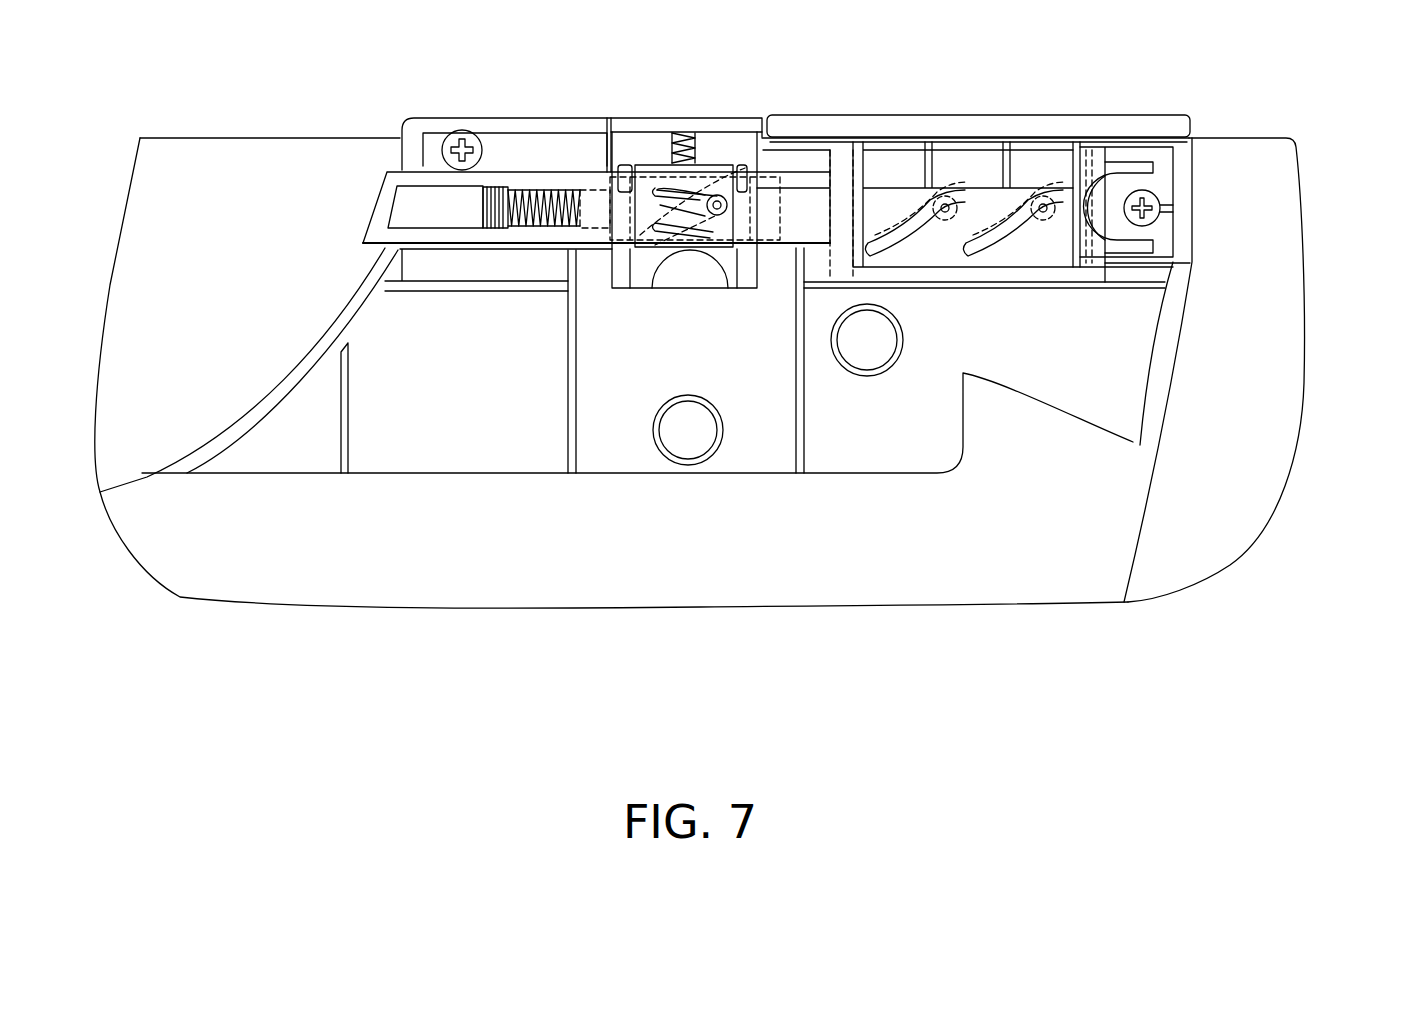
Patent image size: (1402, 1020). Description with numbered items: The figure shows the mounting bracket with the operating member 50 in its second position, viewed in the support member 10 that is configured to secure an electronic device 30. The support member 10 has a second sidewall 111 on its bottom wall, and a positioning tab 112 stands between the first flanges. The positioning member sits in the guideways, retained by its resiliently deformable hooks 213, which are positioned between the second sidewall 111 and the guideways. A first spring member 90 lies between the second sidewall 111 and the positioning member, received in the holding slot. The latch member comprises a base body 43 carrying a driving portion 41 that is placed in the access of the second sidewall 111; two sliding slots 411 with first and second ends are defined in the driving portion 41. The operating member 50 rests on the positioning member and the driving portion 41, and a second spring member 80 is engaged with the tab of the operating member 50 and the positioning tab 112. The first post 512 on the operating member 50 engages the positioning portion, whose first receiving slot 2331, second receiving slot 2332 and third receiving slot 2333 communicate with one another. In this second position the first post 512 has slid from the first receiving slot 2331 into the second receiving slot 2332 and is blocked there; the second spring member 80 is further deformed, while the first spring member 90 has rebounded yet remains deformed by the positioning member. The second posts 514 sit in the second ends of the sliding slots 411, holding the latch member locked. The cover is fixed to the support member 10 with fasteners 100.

The support member 10 is at (258, 413).
The electronic device 30 is at (1247, 169).
The driving portion 41 is at (885, 160).
The base body 43 is at (1123, 127).
The operating member 50 is at (383, 207).
The second spring member 80 is at (503, 190).
The first spring member 90 is at (689, 133).
The fasteners 100 is at (1161, 217).
The second sidewall 111 is at (446, 124).
The positioning tab 112 is at (578, 190).
The hooks 213 is at (630, 170).
The sliding slots 411 is at (920, 198).
The first post 512 is at (790, 185).
The second posts 514 is at (1043, 200).
The first receiving slot 2331 is at (672, 215).
The second receiving slot 2332 is at (727, 232).
The third receiving slot 2333 is at (690, 195).